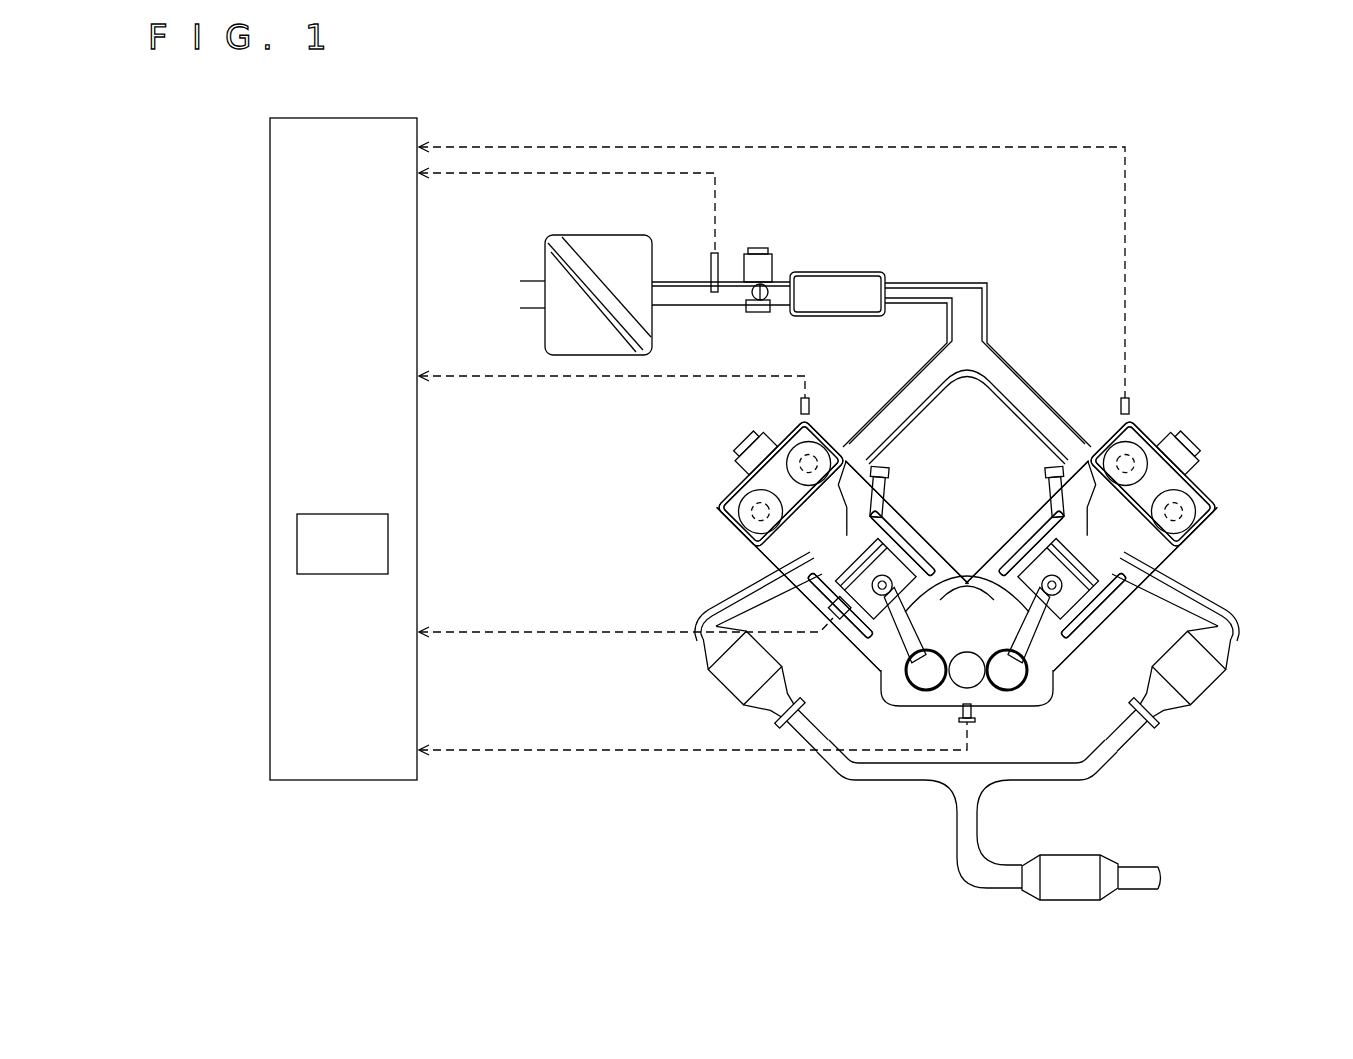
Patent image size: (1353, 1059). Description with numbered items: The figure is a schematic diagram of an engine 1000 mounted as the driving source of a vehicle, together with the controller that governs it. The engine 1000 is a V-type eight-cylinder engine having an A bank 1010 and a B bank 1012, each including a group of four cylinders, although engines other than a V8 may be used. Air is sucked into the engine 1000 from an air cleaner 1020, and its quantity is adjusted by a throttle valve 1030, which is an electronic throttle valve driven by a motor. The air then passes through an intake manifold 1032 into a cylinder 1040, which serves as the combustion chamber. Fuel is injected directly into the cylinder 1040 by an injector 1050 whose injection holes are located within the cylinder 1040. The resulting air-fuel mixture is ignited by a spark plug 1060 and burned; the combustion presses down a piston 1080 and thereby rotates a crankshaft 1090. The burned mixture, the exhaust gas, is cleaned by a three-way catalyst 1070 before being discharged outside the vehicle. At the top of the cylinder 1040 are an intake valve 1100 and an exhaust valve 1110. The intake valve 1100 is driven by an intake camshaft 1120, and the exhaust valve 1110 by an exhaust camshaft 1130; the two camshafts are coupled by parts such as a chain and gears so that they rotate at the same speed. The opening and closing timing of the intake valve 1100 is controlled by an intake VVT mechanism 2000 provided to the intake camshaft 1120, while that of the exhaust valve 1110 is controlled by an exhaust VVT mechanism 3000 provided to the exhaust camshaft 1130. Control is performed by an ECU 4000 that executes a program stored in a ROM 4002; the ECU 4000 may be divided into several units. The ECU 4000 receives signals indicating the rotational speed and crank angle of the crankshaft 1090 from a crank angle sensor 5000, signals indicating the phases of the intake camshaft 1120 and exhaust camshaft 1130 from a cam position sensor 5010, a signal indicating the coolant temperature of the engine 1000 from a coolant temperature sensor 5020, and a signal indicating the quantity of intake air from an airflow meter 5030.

The engine 1000 is at (1032, 270).
The A bank 1010 is at (668, 467).
The B bank 1012 is at (1245, 416).
The air cleaner 1020 is at (598, 236).
The throttle valve 1030 is at (776, 265).
The intake manifold 1032 is at (968, 282).
The cylinder 1040 is at (880, 535).
The injector 1050 is at (888, 475).
The spark plug 1060 is at (748, 452).
The three-way catalyst 1070 is at (722, 690).
The piston 1080 is at (1013, 573).
The crankshaft 1090 is at (988, 690).
The intake valve 1100 is at (835, 470).
The exhaust valve 1110 is at (762, 560).
The intake camshaft 1120 is at (795, 428).
The exhaust camshaft 1130 is at (752, 513).
The intake VVT mechanism 2000 is at (790, 445).
The exhaust VVT mechanism 3000 is at (748, 540).
The ECU 4000 is at (270, 638).
The ROM 4002 is at (297, 544).
The crank angle sensor 5000 is at (972, 728).
The cam position sensor 5010 is at (812, 398).
The coolant temperature sensor 5020 is at (848, 628).
The airflow meter 5030 is at (717, 253).